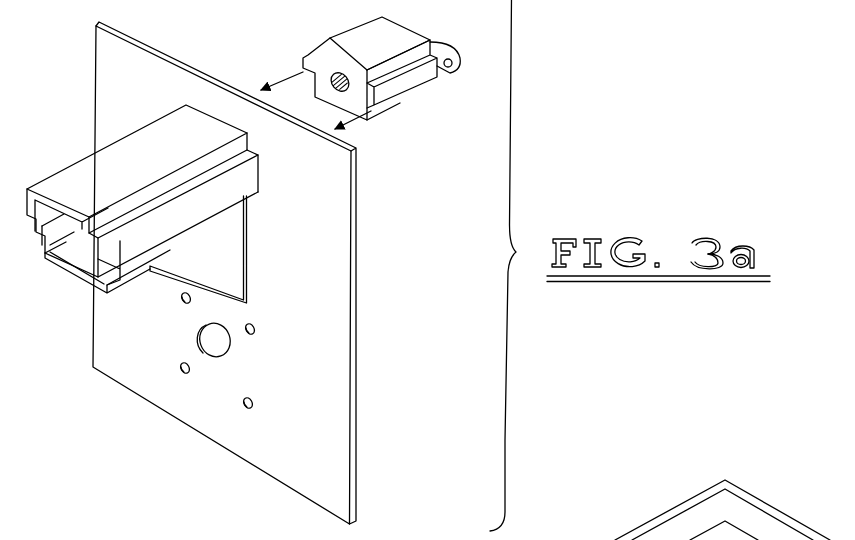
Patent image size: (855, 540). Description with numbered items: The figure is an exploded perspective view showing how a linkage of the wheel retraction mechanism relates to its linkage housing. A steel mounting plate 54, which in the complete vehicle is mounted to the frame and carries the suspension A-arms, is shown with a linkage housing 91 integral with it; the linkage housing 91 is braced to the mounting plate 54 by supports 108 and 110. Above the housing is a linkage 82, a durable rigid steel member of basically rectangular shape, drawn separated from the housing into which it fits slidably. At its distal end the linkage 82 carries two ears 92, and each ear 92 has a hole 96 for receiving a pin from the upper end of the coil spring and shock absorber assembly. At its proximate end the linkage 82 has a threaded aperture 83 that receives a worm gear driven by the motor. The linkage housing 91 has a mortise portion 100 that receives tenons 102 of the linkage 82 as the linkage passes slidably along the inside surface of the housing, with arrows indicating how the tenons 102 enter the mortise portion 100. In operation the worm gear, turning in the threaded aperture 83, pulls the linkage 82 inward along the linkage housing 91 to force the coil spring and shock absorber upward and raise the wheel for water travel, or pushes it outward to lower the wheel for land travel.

The mounting plate 54 is at (302, 287).
The linkage 82 is at (384, 51).
The threaded aperture 83 is at (336, 76).
The linkage housing 91 is at (178, 155).
The ear 92 is at (441, 48).
The hole 96 is at (444, 70).
The mortise portion 100 is at (38, 212).
The tenon 102 is at (306, 61).
The support 108 is at (222, 263).
The support 110 is at (122, 285).